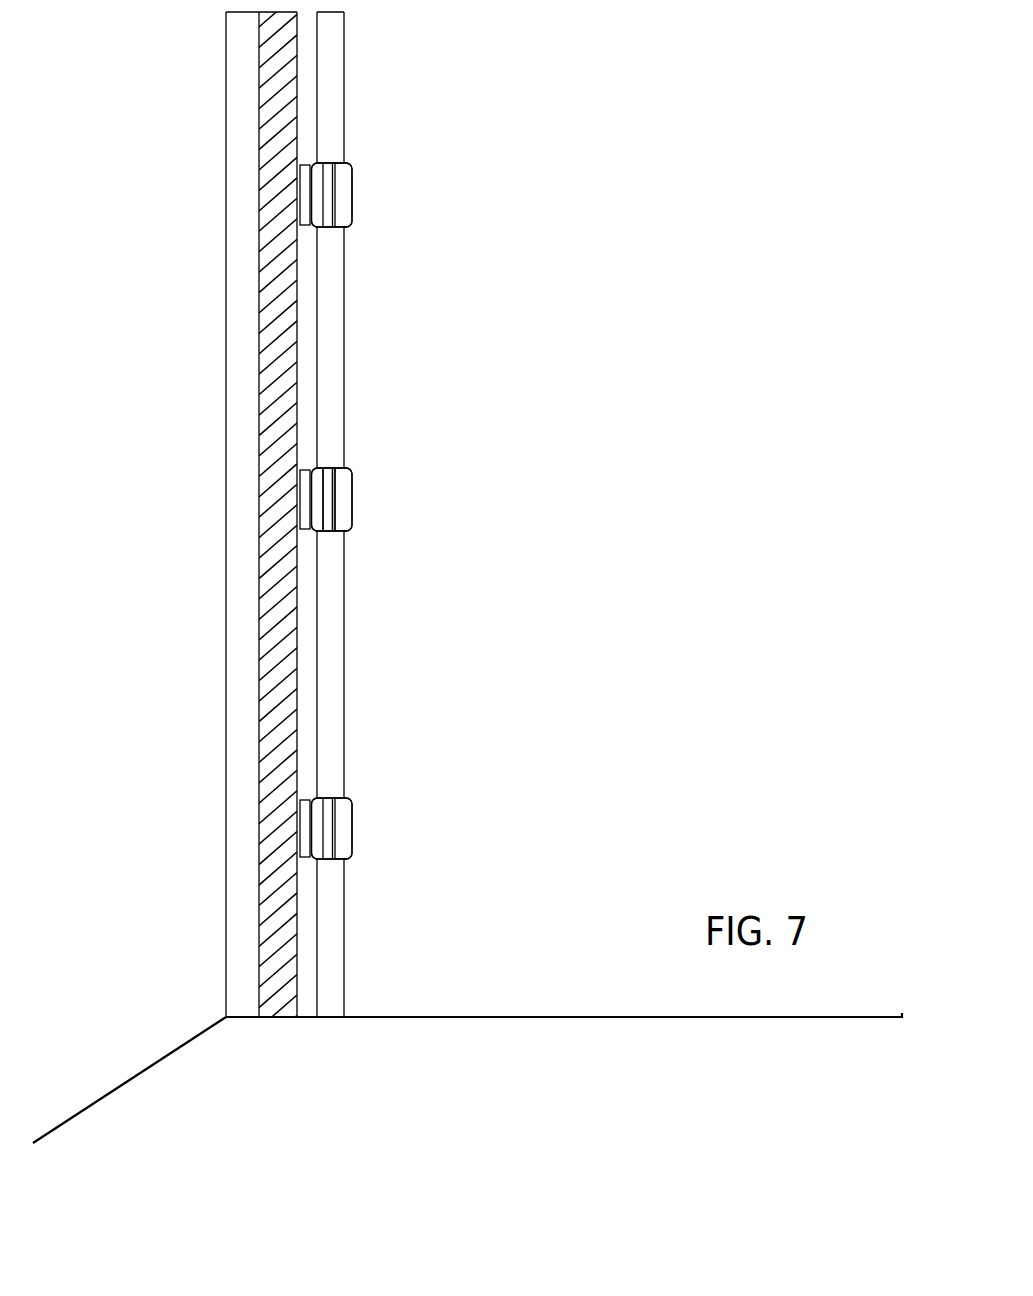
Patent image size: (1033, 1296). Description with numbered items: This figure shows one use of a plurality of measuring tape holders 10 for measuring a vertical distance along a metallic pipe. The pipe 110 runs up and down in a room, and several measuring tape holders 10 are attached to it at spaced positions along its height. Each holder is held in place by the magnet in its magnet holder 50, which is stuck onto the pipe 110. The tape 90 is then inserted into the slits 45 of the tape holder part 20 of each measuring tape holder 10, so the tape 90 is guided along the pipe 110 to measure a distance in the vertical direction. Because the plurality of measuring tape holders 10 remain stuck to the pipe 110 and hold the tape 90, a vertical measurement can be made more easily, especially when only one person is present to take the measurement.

The measuring tape holder 10 is at (385, 156).
The tape holder part 20 is at (352, 193).
The slits 45 is at (330, 531).
The magnet holder 50 is at (300, 165).
The tape 90 is at (340, 282).
The pipe 110 is at (273, 275).